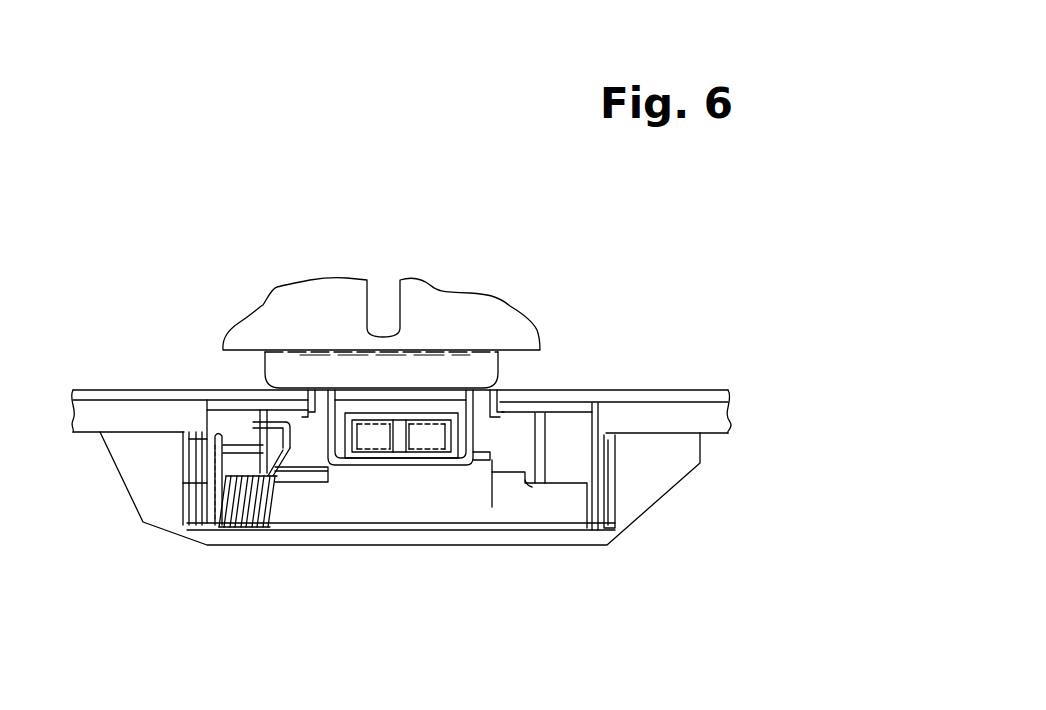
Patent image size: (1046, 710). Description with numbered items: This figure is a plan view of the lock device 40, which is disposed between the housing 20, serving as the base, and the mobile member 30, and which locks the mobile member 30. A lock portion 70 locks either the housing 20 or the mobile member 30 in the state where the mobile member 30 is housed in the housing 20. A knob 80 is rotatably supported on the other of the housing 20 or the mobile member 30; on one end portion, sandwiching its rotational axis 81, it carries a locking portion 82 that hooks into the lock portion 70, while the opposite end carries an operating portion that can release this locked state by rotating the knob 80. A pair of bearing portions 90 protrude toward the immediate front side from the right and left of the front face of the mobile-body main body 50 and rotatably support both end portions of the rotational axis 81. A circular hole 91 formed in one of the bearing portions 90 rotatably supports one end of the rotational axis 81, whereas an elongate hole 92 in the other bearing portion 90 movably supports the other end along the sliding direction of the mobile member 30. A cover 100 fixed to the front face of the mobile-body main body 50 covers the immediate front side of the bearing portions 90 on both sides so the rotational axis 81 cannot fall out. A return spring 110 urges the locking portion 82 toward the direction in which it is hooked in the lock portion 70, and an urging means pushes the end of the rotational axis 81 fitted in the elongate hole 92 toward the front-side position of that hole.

The housing 20 is at (462, 300).
The mobile member 30 is at (710, 477).
The lock device 40 is at (177, 190).
The mobile-body main body 50 is at (683, 412).
The lock portion 70 is at (483, 388).
The knob 80 is at (466, 543).
The rotational axis 81 is at (530, 536).
The locking portion 82 is at (422, 442).
The bearing portions 90 is at (185, 453).
The circular hole 91 is at (183, 508).
The elongate hole 92 is at (615, 480).
The cover 100 is at (322, 535).
The return spring 110 is at (245, 530).